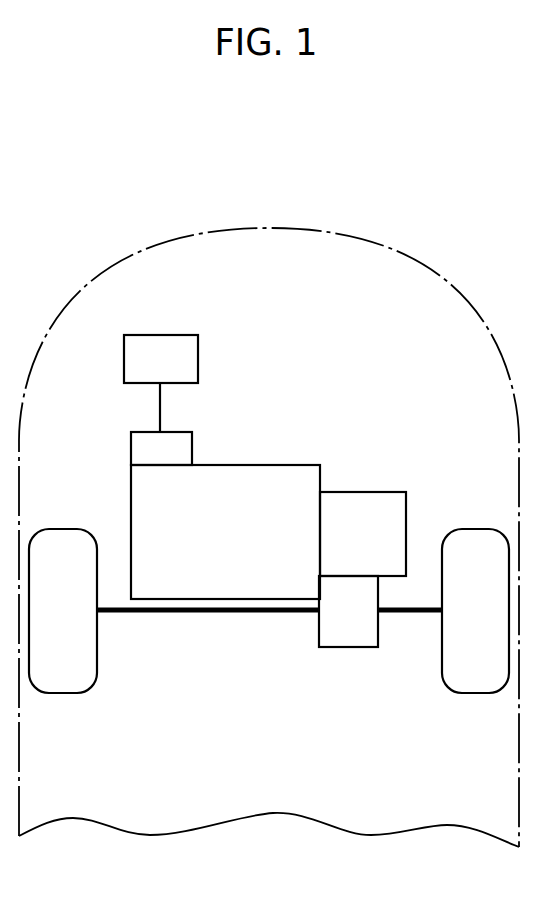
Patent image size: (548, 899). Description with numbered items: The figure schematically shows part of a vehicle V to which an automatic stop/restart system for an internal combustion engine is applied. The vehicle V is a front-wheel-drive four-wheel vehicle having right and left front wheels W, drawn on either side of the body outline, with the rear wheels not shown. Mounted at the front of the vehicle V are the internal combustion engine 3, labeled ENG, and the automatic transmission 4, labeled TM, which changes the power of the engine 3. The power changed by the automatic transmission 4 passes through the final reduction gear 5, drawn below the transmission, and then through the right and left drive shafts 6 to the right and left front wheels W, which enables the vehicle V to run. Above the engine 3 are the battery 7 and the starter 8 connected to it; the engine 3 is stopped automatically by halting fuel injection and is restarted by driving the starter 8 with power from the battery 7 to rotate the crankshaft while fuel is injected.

The vehicle V is at (310, 228).
The front wheels W is at (58, 529).
The internal combustion engine 3 is at (274, 464).
The automatic transmission 4 is at (362, 492).
The final reduction gear 5 is at (343, 647).
The drive shafts 6 is at (213, 613).
The battery 7 is at (198, 352).
The starter 8 is at (192, 446).